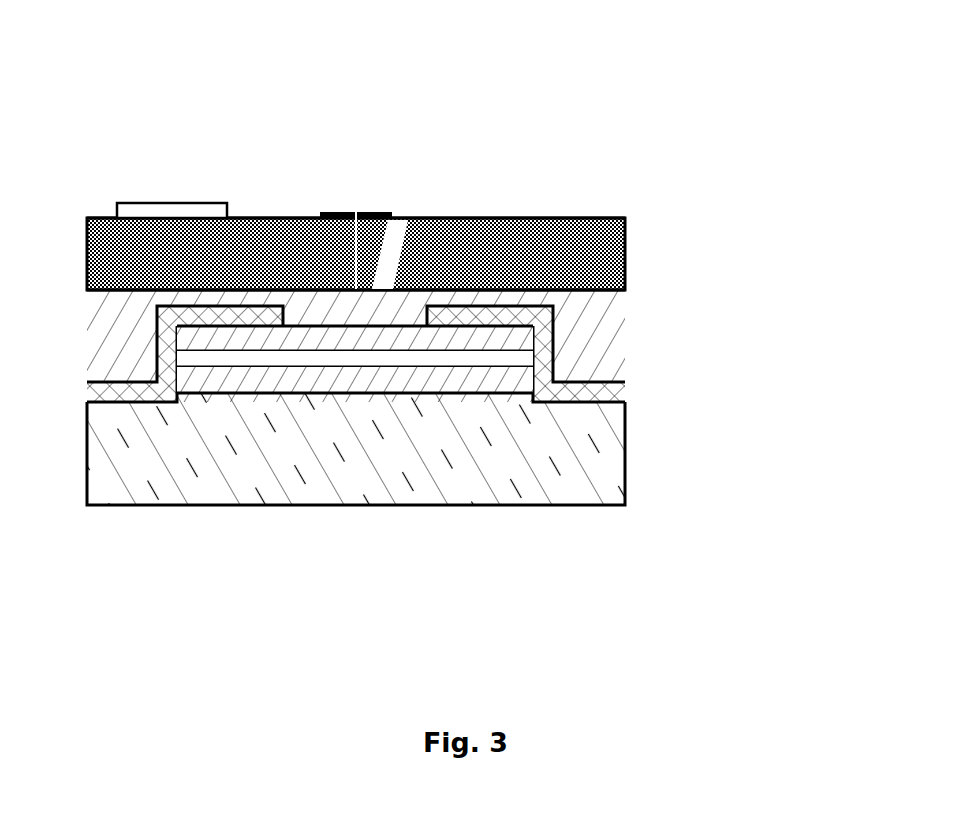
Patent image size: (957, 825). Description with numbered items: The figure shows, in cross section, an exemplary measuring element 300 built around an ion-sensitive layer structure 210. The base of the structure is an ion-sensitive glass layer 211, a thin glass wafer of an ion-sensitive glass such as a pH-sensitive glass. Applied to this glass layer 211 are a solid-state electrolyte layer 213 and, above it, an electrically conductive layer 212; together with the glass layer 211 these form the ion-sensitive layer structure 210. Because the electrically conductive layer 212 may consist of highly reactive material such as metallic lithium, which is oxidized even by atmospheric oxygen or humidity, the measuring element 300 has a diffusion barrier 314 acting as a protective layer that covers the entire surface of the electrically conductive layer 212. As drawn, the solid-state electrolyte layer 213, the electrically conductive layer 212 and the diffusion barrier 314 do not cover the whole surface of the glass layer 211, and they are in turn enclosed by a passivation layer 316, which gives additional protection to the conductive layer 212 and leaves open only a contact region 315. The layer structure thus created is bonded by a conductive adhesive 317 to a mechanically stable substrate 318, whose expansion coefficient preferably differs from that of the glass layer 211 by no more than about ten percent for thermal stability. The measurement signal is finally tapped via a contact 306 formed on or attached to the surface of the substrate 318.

The measuring element 300 is at (461, 362).
The contact 306 is at (358, 217).
The contact region 315 is at (375, 305).
The mechanically stable substrate 318 is at (567, 242).
The passivation layer 316 is at (542, 318).
The conductive adhesive 317 is at (585, 313).
The diffusion barrier 314 is at (507, 343).
The electrically conductive layer 212 is at (518, 360).
The solid-state electrolyte layer 213 is at (508, 378).
The ion-sensitive glass layer 211 is at (417, 468).
The ion-sensitive layer structure 210 is at (486, 450).